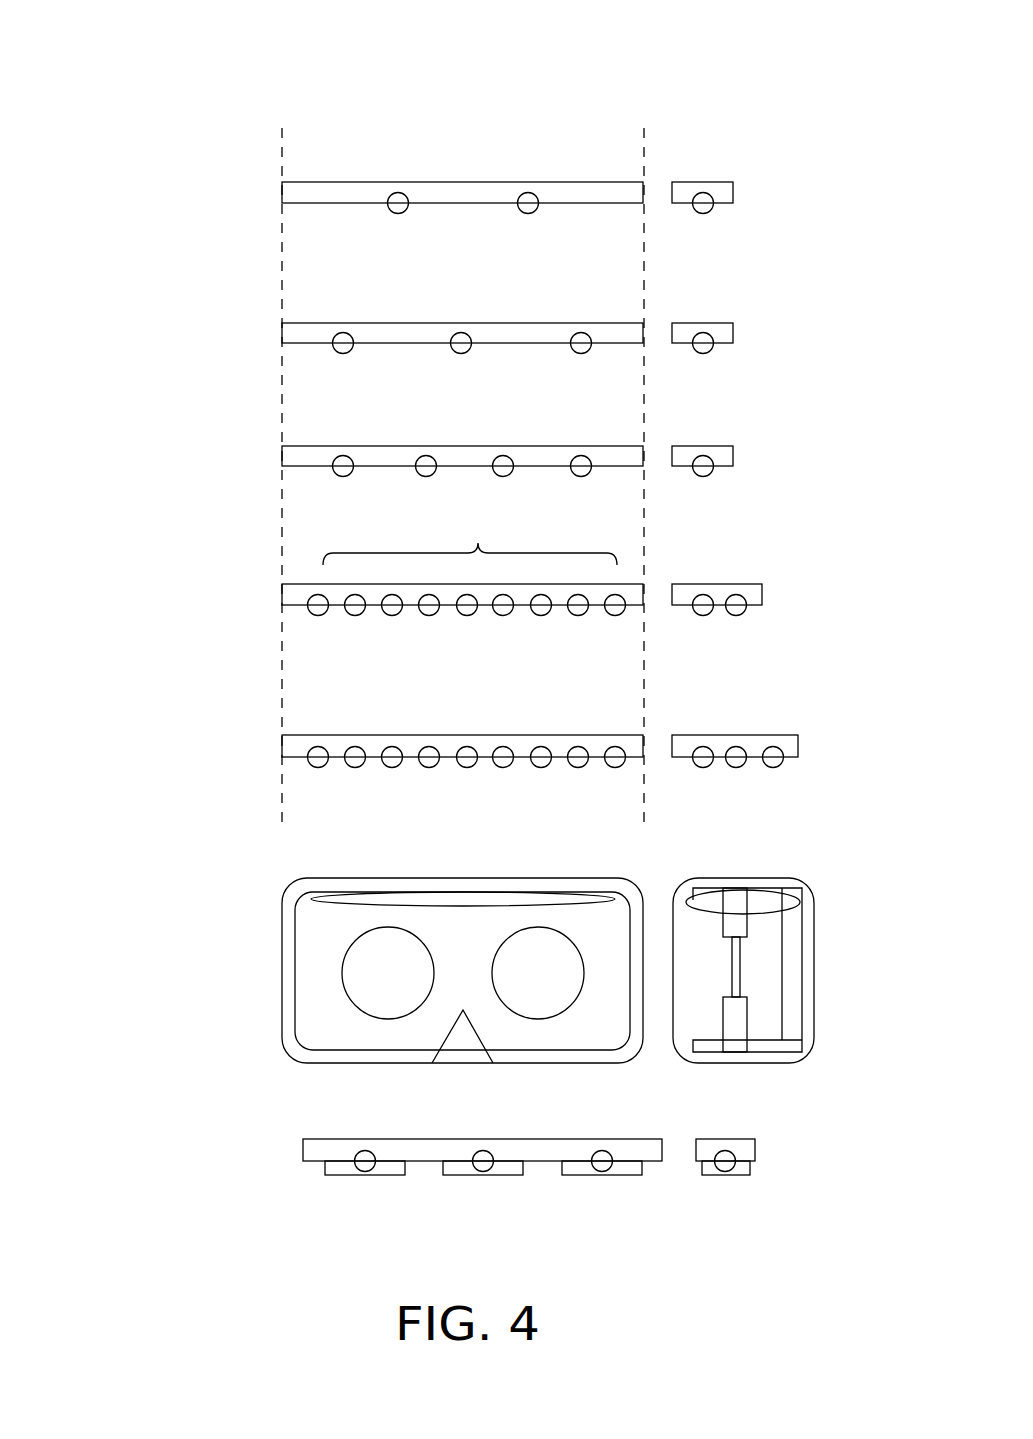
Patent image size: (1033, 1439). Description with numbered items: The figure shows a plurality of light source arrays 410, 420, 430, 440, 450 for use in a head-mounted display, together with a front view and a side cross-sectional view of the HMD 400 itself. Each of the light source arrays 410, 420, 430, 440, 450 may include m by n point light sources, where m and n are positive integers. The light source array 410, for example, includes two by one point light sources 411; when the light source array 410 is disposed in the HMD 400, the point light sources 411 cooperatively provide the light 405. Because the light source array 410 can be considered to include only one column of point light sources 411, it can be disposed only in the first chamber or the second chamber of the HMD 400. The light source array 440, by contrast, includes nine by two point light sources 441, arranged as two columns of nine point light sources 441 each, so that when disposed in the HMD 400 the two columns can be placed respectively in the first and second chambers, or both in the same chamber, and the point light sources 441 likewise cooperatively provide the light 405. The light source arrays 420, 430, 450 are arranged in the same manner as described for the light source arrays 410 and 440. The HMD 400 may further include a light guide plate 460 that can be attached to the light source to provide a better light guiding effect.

The HMD 400 is at (518, 974).
The light 405 is at (312, 898).
The light source array 410 is at (400, 107).
The point light sources 411 is at (702, 200).
The light source array 420 is at (242, 350).
The light source array 430 is at (242, 463).
The light source array 440 is at (414, 562).
The point light sources 441 is at (736, 605).
The light source array 450 is at (242, 752).
The light guide plate 460 is at (628, 1168).